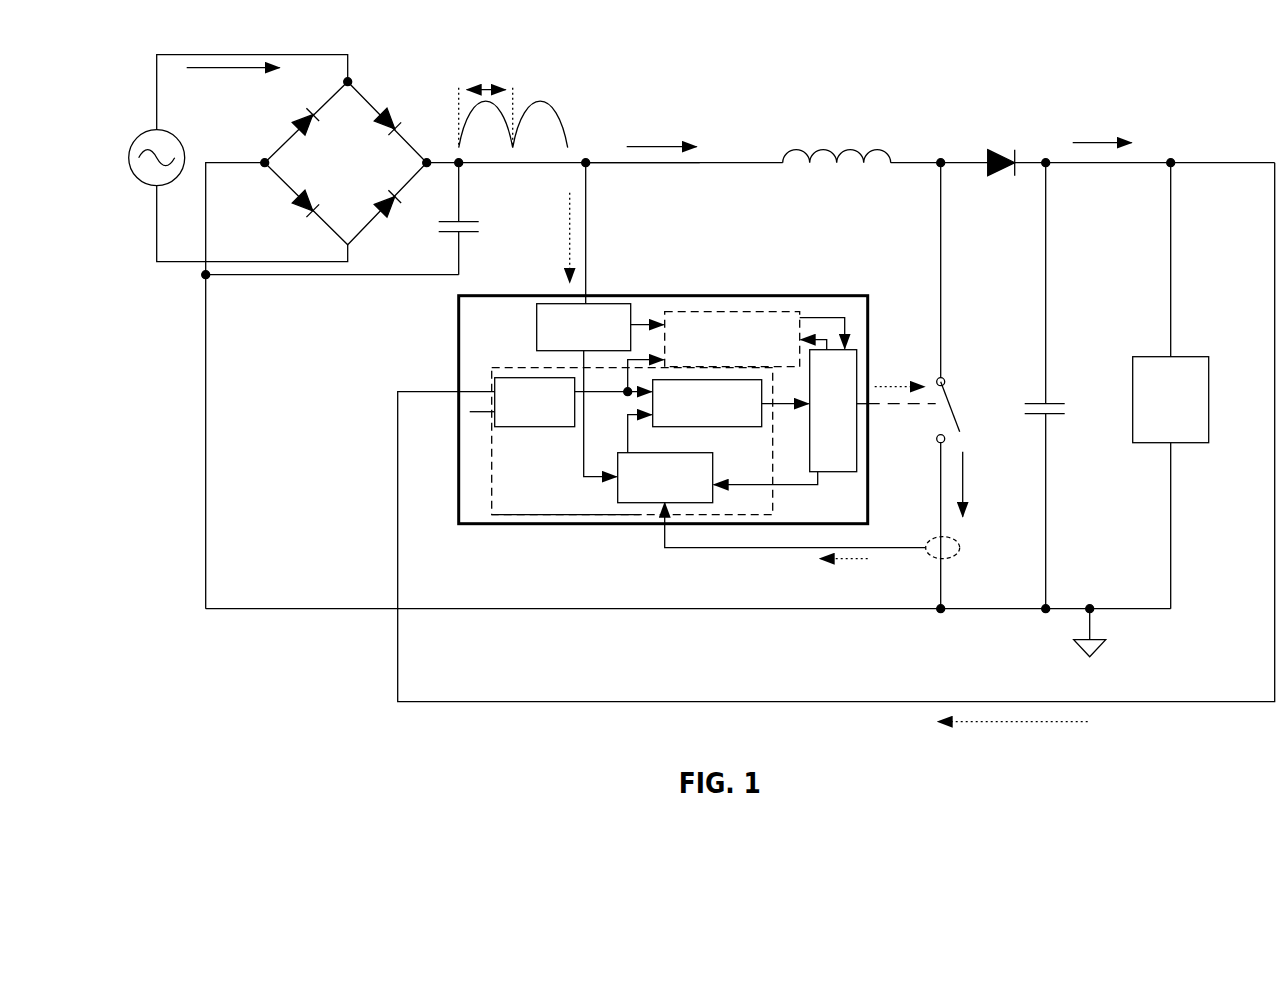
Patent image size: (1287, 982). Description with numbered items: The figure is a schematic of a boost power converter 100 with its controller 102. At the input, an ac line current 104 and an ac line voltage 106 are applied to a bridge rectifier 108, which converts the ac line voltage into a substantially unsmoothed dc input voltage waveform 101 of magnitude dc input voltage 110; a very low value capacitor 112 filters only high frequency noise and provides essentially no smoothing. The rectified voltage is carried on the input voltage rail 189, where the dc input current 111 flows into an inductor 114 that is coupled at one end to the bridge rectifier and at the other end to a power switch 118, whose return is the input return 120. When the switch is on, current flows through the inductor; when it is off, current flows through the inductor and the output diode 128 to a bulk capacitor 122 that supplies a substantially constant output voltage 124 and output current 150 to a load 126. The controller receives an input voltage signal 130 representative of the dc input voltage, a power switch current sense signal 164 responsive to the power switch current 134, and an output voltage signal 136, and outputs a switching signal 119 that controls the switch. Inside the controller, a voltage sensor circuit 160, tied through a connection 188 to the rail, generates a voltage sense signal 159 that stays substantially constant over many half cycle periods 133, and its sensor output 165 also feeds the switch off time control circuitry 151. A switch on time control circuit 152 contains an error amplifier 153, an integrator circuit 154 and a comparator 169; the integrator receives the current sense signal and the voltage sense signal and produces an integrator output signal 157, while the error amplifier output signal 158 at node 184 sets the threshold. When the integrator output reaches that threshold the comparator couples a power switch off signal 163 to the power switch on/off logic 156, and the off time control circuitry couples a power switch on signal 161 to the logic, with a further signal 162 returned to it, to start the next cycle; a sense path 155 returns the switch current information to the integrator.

The power converter 100 is at (803, 66).
The dc input voltage waveform 101 is at (546, 102).
The controller 102 is at (748, 296).
The ac line current IG 104 is at (230, 80).
The ac line voltage VG 106 is at (149, 121).
The bridge rectifier 108 is at (373, 95).
The dc input voltage VIN 110 is at (413, 241).
The dc input current IIN 111 is at (658, 120).
The capacitor 112 is at (461, 215).
The inductor L1 114 is at (828, 126).
The power switch SW 118 is at (958, 389).
The switching signal USW 119 is at (887, 363).
The input return 120 is at (1082, 628).
The bulk capacitor 122 is at (1062, 425).
The output voltage VOUT 124 is at (1243, 348).
The load 126 is at (1132, 352).
The output diode D1 128 is at (1022, 154).
The input voltage signal UVIN 130 is at (552, 263).
The half cycle period Tm 133 is at (502, 68).
The power switch current ISW 134 is at (975, 482).
The output voltage signal UVOUT 136 is at (990, 733).
The output current IOUT 150 is at (1113, 130).
The switch off time control circuitry 151 is at (697, 312).
The switch on time control circuit 152 is at (533, 517).
The error amplifier 153 is at (527, 428).
The integrator circuit 154 is at (613, 505).
The switch current feedback line 155 is at (817, 488).
The power switch on/off logic 156 is at (857, 440).
The integrator output signal 157 is at (630, 434).
The error amplifier output signal 158 is at (630, 395).
The voltage sense signal 159 is at (578, 432).
The voltage sensor circuit 160 is at (533, 330).
The power switch on signal 161 is at (846, 318).
The switch logic signal to off-time control 162 is at (842, 315).
The power switch off signal 163 is at (797, 412).
The power switch current sense signal UIIN 164 is at (866, 565).
The Vin sensor output 165 is at (657, 313).
The comparator 169 is at (768, 439).
The error amplifier output node 184 is at (630, 370).
The connection 188 is at (590, 223).
The input voltage rail 189 is at (636, 172).